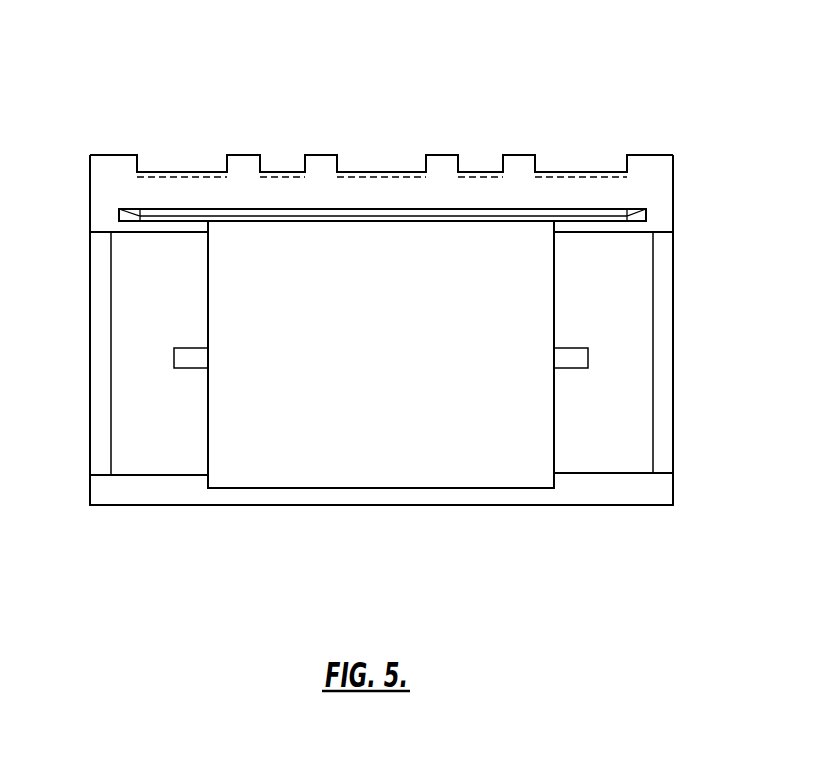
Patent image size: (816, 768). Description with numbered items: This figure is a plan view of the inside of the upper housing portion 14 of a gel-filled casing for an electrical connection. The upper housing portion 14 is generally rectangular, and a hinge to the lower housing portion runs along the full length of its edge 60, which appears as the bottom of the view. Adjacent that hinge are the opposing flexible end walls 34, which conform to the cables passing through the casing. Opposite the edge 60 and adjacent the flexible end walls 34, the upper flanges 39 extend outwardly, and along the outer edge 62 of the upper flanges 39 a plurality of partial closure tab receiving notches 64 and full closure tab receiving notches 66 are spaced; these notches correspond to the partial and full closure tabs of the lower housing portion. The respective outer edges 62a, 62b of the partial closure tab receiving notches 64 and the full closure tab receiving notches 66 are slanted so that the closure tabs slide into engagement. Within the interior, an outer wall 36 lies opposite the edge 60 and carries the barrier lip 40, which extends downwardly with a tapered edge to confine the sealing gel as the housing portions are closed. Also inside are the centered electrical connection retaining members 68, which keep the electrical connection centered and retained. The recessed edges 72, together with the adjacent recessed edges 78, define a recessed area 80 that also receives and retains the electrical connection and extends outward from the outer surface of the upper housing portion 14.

The upper housing portion 14 is at (673, 94).
The flexible end walls 34 is at (95, 316).
The outer wall 36 is at (137, 232).
The upper flanges 39 is at (664, 184).
The barrier lip 40 is at (613, 209).
The edge 60 is at (650, 507).
The outer edge 62 is at (110, 155).
The outer edge of partial closure tab receiving notch 62a is at (295, 172).
The outer edge of full closure tab receiving notch 62b is at (214, 172).
The partial closure tab receiving notches 64 is at (277, 172).
The full closure tab receiving notches 66 is at (181, 172).
The electrical connection retaining members 68 is at (185, 359).
The recessed edges 72 is at (208, 440).
The recessed edges 78 is at (533, 222).
The recessed area 80 is at (466, 421).